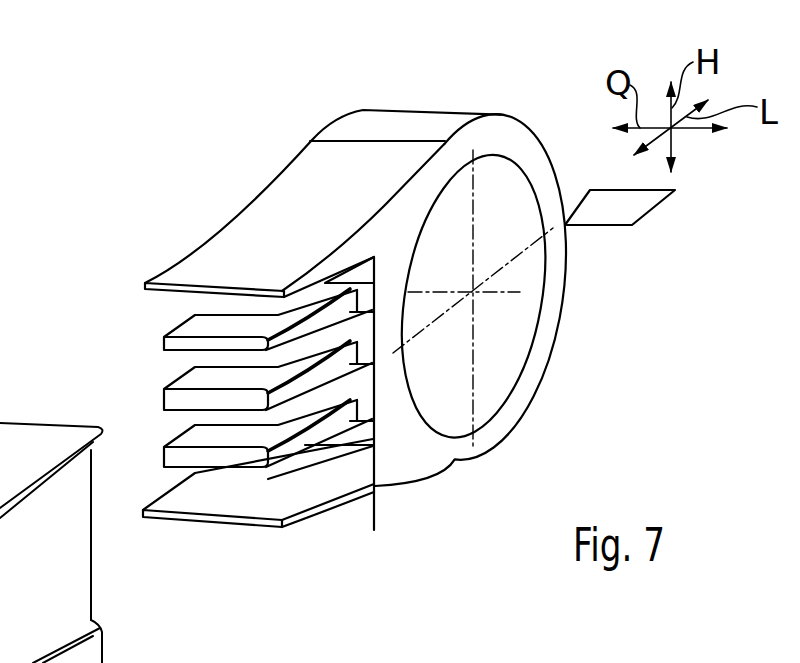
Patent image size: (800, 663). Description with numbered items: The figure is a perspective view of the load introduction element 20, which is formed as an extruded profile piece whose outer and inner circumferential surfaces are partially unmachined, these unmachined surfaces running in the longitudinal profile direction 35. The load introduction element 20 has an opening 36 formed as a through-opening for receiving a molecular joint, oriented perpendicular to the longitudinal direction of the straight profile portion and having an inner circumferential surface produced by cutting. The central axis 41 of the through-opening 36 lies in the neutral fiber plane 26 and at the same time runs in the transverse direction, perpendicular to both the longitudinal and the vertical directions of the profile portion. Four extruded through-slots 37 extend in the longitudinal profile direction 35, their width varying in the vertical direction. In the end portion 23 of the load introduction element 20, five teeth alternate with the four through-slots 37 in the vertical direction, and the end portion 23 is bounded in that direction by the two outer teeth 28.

The load introduction element 20 is at (250, 161).
The end portion 23 is at (282, 523).
The neutral fiber plane 26 is at (606, 205).
The outer teeth 28 is at (243, 262).
The longitudinal profile direction 35 is at (505, 110).
The opening 36 is at (487, 358).
The through-slots 37 is at (181, 369).
The central axis 41 is at (508, 291).